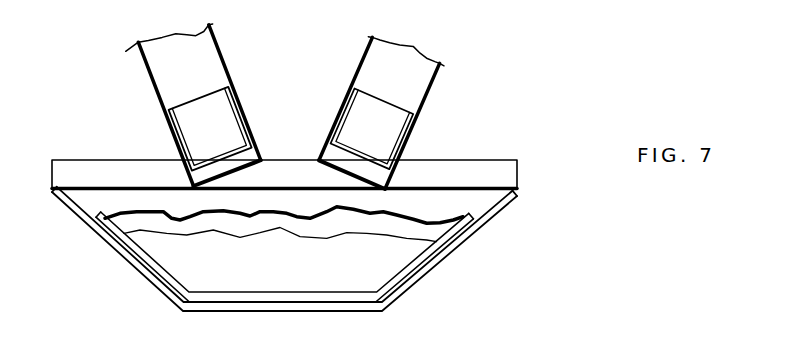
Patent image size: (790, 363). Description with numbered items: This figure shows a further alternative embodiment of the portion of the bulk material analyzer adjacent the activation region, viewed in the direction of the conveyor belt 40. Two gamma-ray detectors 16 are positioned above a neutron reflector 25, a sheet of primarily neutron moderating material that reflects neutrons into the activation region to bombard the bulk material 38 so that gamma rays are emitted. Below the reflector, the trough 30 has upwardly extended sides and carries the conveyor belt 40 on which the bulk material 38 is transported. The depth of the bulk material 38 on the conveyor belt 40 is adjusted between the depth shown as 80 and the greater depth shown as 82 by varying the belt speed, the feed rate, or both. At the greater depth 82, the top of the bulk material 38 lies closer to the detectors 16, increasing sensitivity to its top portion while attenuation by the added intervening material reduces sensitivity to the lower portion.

The gamma-ray detectors 16 is at (253, 128).
The neutron reflector 25 is at (477, 161).
The trough 30 is at (511, 203).
The bulk material 38 is at (293, 277).
The conveyor belt 40 is at (464, 232).
The depth of bulk material 80 is at (360, 236).
The greater depth of bulk material 82 is at (402, 212).